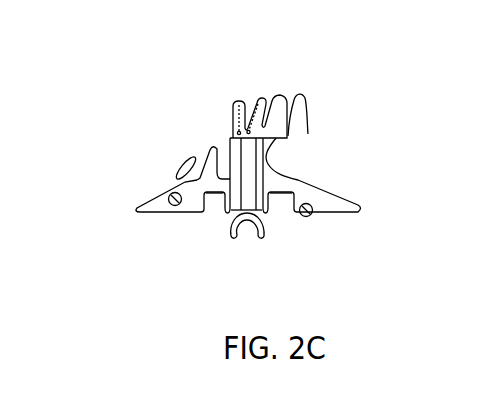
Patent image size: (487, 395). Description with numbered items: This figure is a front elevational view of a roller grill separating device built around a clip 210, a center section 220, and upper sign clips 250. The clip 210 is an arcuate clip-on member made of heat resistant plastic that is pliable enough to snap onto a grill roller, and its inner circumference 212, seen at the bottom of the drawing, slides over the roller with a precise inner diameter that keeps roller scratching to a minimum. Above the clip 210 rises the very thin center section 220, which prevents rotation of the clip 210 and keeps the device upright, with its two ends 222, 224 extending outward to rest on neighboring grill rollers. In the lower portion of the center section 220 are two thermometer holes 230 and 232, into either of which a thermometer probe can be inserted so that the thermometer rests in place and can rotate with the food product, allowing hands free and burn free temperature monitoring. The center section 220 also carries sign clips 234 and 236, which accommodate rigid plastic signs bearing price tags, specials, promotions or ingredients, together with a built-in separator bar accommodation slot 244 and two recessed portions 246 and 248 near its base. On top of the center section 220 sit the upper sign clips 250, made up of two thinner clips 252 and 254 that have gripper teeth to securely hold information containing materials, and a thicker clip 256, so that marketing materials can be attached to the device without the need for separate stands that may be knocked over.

The clip 210 is at (297, 264).
The inner circumference 212 is at (252, 218).
The center section 220 is at (301, 171).
The end 222 is at (137, 210).
The end 224 is at (362, 208).
The thermometer hole 230 is at (172, 205).
The thermometer hole 232 is at (313, 214).
The sign clip 234 is at (181, 166).
The sign clip 236 is at (225, 172).
The separator bar accommodation slot 244 is at (248, 160).
The recessed portion 246 is at (218, 193).
The recessed portion 248 is at (279, 194).
The upper sign clips 250 is at (302, 72).
The thinner clip 252 is at (232, 102).
The thinner clip 254 is at (261, 100).
The thicker clip 256 is at (308, 104).